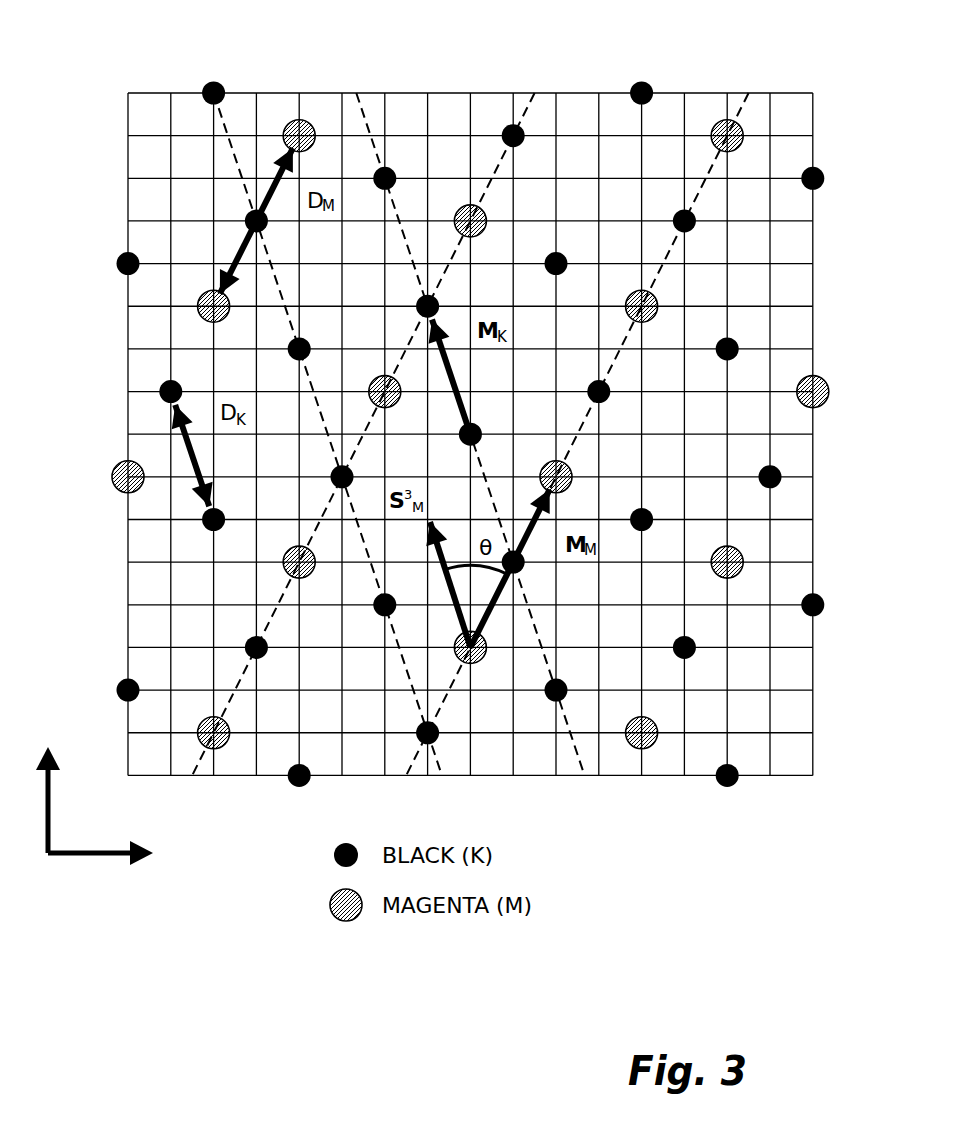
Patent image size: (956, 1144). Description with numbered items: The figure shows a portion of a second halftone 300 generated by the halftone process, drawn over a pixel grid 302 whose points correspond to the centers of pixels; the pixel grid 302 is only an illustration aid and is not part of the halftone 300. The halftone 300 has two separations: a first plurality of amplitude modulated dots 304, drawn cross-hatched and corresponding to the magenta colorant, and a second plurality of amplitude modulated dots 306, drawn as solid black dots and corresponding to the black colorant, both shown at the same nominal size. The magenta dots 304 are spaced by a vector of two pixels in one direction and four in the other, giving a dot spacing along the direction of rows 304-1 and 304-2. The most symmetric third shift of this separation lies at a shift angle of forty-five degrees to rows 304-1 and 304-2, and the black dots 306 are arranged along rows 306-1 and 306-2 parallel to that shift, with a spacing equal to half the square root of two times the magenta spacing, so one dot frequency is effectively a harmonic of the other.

The second halftone 300 is at (159, 910).
The pixel grid 302 is at (128, 121).
The first plurality of amplitude modulated dots 304 is at (116, 468).
The row of the first halftone separation 304-1 is at (741, 97).
The row of the first halftone separation 304-2 is at (535, 95).
The second plurality of amplitude modulated dots 306 is at (118, 262).
The row of the second halftone separation 306-1 is at (357, 95).
The row of the second halftone separation 306-2 is at (222, 84).